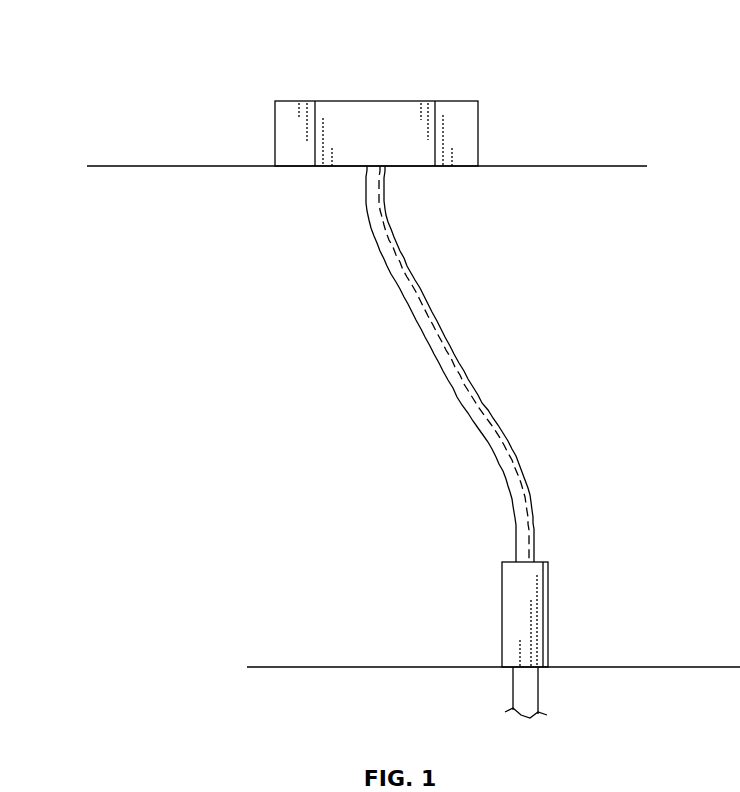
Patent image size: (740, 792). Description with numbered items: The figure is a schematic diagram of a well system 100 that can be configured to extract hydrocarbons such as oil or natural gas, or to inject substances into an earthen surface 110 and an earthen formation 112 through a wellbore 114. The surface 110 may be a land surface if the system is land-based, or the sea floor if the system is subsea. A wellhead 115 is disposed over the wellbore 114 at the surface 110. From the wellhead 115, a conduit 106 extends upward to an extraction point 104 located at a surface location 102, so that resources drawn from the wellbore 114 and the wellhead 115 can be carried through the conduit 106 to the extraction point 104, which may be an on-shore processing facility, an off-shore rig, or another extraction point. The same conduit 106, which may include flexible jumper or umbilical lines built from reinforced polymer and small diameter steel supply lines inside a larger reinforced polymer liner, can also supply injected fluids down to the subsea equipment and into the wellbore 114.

The well system 100 is at (196, 36).
The surface location 102 is at (580, 165).
The extraction point 104 is at (377, 100).
The conduit 106 is at (533, 500).
The earthen surface 110 is at (332, 667).
The earthen formation 112 is at (443, 716).
The wellbore 114 is at (540, 695).
The wellhead 115 is at (550, 600).